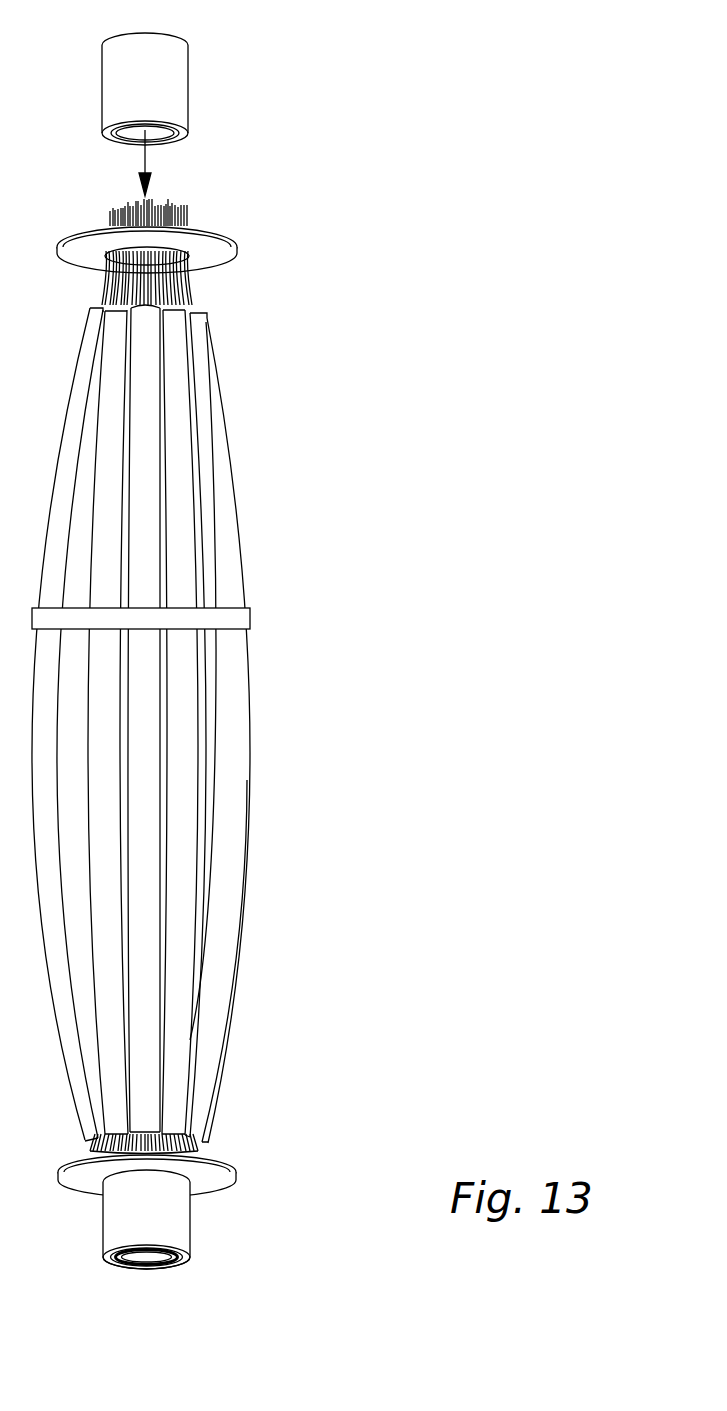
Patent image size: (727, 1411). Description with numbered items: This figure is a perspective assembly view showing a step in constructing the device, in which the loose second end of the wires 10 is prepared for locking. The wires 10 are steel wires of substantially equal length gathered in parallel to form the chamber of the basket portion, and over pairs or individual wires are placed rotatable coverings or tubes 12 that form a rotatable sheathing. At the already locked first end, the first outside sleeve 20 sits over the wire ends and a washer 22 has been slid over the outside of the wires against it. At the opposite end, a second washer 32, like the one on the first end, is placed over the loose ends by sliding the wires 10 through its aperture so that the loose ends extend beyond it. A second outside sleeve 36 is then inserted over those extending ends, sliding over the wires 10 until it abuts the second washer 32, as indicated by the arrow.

The second outside sleeve 36 is at (185, 75).
The second washer 32 is at (237, 248).
The wires 10 is at (182, 292).
The rotatable coverings or tubes 12 is at (232, 558).
The washer 22 is at (243, 1173).
The first outside sleeve 20 is at (190, 1237).